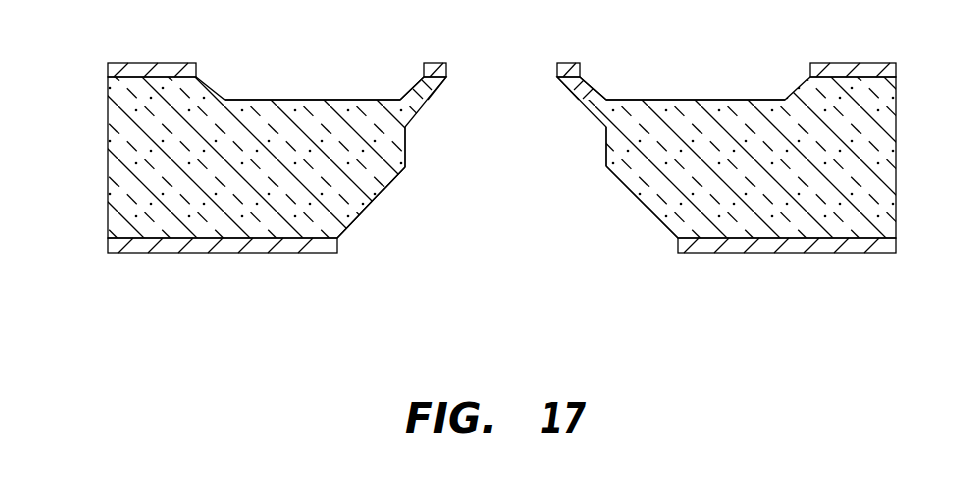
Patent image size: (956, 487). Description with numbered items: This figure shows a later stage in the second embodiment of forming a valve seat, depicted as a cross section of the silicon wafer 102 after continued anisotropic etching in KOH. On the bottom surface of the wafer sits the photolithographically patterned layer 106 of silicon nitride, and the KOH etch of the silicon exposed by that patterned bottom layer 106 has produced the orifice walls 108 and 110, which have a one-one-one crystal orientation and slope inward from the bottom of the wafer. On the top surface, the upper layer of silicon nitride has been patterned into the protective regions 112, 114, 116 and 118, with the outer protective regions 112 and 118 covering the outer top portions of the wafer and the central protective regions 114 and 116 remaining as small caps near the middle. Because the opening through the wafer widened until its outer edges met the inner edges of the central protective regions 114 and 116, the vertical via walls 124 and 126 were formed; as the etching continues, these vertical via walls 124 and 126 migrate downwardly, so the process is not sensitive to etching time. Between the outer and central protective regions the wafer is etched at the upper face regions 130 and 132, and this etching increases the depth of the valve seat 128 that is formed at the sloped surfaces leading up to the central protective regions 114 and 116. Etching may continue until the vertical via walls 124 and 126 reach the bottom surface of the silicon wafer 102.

The silicon wafer 102 is at (136, 152).
The photolithographically patterned layer of silicon nitride 106 is at (200, 246).
The orifice wall 108 is at (370, 205).
The orifice wall 110 is at (644, 208).
The protective region 112 is at (171, 63).
The protective region 114 is at (428, 63).
The protective region 116 is at (570, 63).
The protective region 118 is at (812, 73).
The vertical via wall 124 is at (405, 142).
The vertical via wall 126 is at (606, 143).
The valve seat 128 is at (572, 100).
The upper face region 130 is at (316, 100).
The upper face region 132 is at (660, 100).